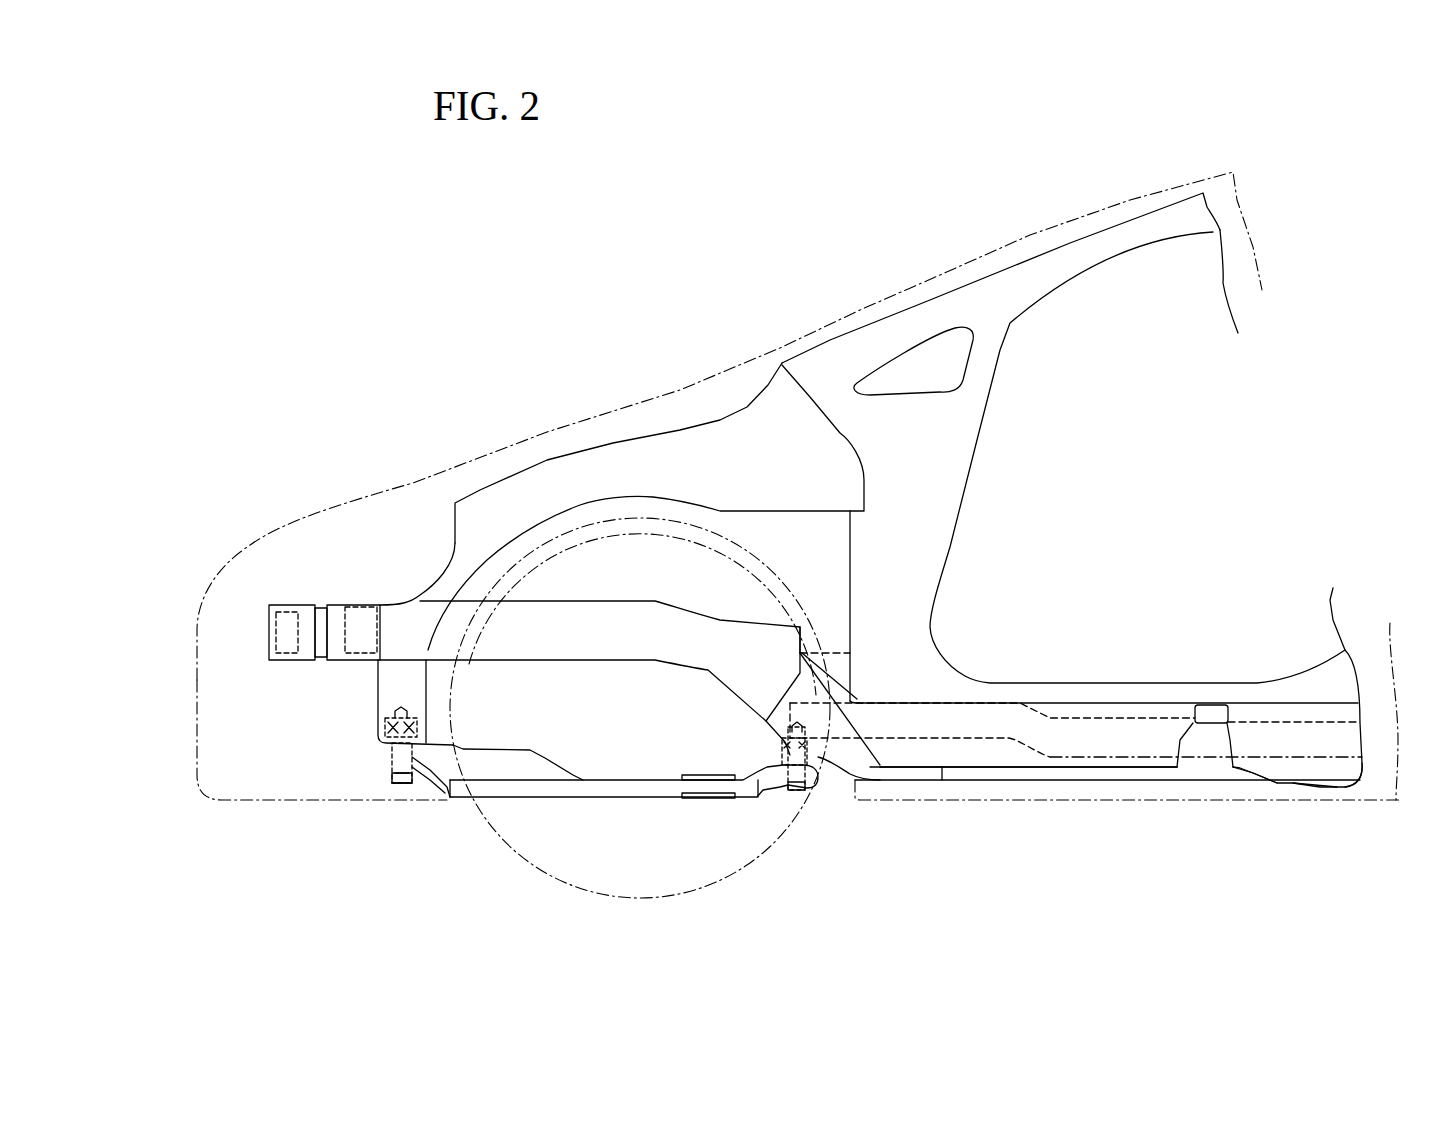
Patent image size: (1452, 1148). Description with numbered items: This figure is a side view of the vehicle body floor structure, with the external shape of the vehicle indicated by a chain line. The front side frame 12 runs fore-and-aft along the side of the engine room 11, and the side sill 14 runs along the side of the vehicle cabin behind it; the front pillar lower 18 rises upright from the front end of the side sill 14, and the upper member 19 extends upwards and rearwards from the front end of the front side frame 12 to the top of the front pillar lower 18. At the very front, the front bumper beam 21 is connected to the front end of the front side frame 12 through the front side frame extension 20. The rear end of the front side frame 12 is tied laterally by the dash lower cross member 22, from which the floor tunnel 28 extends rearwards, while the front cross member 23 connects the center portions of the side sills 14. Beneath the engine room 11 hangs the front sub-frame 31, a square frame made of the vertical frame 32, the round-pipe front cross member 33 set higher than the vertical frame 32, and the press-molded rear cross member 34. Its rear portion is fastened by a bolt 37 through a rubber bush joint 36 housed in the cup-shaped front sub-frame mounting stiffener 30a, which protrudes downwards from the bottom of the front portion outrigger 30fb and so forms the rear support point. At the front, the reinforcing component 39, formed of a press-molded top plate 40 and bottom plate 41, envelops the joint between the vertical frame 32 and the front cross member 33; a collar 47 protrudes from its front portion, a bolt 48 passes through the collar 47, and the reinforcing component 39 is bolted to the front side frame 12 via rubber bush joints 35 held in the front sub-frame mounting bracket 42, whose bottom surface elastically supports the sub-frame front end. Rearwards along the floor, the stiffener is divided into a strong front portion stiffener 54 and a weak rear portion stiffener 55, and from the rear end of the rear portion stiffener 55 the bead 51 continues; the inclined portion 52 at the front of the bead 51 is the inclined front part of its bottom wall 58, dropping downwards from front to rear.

The engine room 11 is at (655, 733).
The front side frame 12 is at (557, 642).
The side sill 14 is at (1268, 712).
The front pillar lower 18 is at (928, 544).
The upper member 19 is at (573, 483).
The front side frame extension 20 is at (318, 613).
The front bumper beam 21 is at (268, 630).
The dash lower cross member 22 is at (838, 645).
The front cross member 23 is at (1177, 752).
The floor tunnel 28 is at (1107, 718).
The front sub-frame mounting stiffener 30a is at (783, 760).
The front portion outrigger 30fb is at (832, 758).
The front sub-frame 31 is at (614, 792).
The vertical frame 32 is at (661, 785).
The front cross member 33 is at (393, 765).
The rear cross member 34 is at (710, 798).
The rubber bush joint 35 is at (388, 713).
The rubber bush joint 36 is at (784, 748).
The bolt 37 is at (796, 793).
The reinforcing component 39 is at (497, 750).
The top plate 40 is at (386, 762).
The bottom plate 41 is at (386, 762).
The front sub-frame mounting bracket 42 is at (392, 681).
The collar 47 is at (398, 784).
The bolt 48 is at (402, 784).
The bead 51 is at (1322, 779).
The inclined portion 52 is at (1246, 783).
The front portion stiffener 54 is at (920, 777).
The rear portion stiffener 55 is at (1083, 778).
The bottom wall 58 is at (1348, 783).